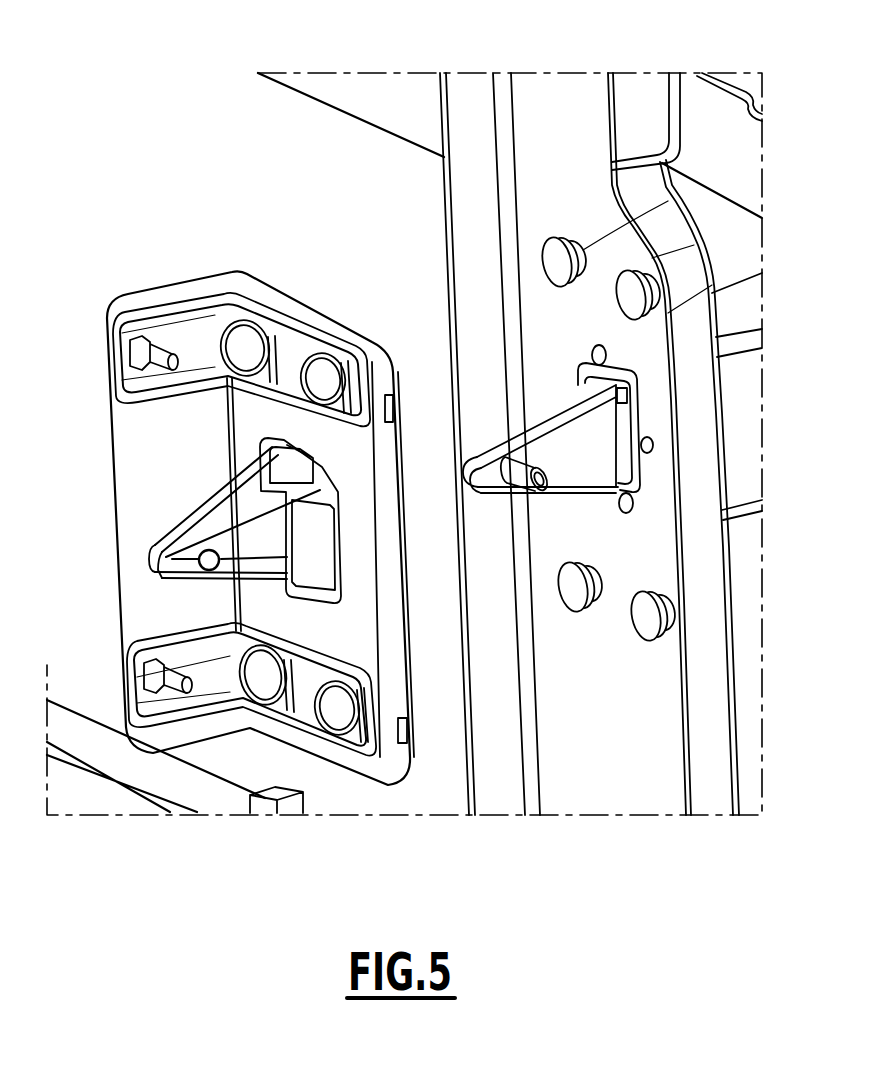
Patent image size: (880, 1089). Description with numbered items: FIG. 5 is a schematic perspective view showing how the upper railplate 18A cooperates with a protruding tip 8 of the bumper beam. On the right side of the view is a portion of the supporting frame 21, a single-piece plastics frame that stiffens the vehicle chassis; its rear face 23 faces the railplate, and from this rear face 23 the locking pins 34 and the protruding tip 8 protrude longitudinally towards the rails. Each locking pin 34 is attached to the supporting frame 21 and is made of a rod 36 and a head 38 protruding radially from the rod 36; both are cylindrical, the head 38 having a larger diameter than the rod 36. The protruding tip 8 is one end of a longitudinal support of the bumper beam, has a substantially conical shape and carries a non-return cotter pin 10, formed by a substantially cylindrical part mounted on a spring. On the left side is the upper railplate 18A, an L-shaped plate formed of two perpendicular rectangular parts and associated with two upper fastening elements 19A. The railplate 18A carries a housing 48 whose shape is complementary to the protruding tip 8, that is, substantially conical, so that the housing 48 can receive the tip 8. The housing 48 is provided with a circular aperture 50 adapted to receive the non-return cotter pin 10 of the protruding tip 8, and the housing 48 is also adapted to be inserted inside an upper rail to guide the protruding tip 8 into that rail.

The protruding tip 8 is at (547, 420).
The non-return cotter pin 10 is at (530, 490).
The upper railplate 18A is at (133, 283).
The upper fastening elements 19A is at (120, 414).
The supporting frame 21 is at (643, 133).
The rear face 23 is at (571, 134).
The locking pin 34 is at (608, 312).
The rod 36 is at (668, 201).
The head 38 is at (550, 252).
The housing 48 is at (214, 526).
The circular aperture 50 is at (218, 574).